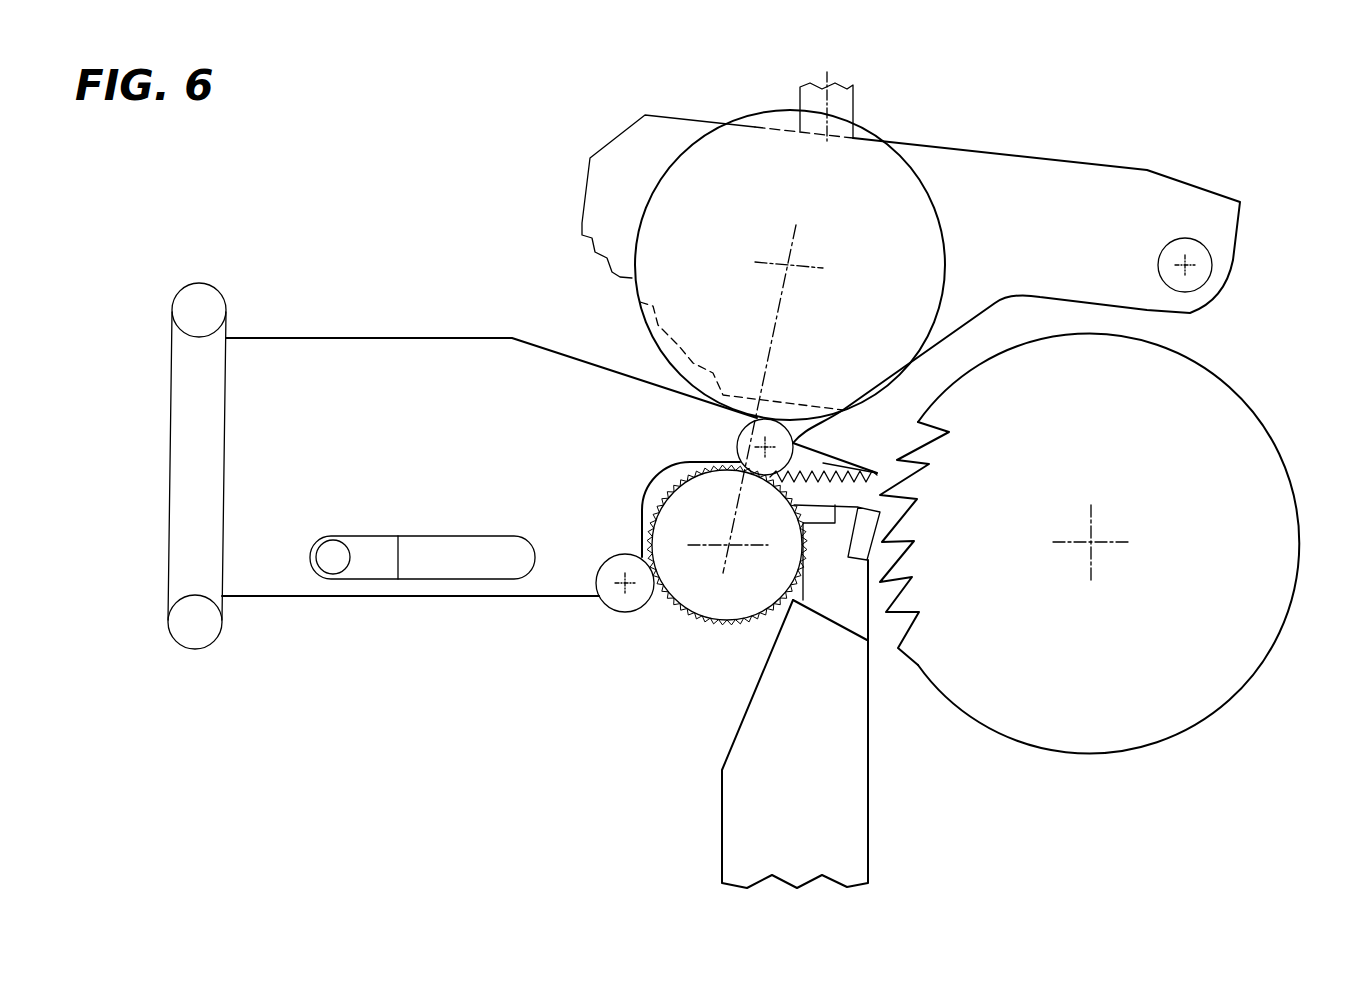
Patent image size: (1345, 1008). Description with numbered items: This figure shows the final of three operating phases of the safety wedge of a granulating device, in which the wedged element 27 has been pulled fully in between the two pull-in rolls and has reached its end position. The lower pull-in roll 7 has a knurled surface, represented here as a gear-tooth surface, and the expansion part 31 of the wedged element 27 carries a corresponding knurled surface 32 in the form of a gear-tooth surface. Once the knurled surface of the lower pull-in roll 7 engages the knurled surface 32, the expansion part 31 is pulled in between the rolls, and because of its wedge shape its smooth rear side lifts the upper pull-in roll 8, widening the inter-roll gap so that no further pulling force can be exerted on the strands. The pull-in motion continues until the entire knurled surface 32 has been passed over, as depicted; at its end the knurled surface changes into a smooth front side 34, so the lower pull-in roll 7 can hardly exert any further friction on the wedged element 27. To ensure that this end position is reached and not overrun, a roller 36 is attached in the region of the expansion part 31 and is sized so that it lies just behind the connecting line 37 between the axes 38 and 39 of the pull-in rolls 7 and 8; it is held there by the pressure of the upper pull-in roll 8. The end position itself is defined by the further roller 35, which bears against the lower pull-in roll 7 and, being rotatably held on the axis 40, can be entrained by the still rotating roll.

The lower pull-in roll 7 is at (697, 593).
The upper pull-in roll 8 is at (717, 205).
The wedged element 27 is at (397, 383).
The expansion part 31 is at (823, 463).
The knurled surface 32 is at (823, 482).
The smooth front side 34 is at (740, 448).
The roller 35 is at (600, 597).
The roller 36 is at (793, 443).
The connecting line 37 is at (770, 340).
The axis 38 is at (793, 262).
The axis 39 is at (717, 620).
The axis 40 is at (624, 588).